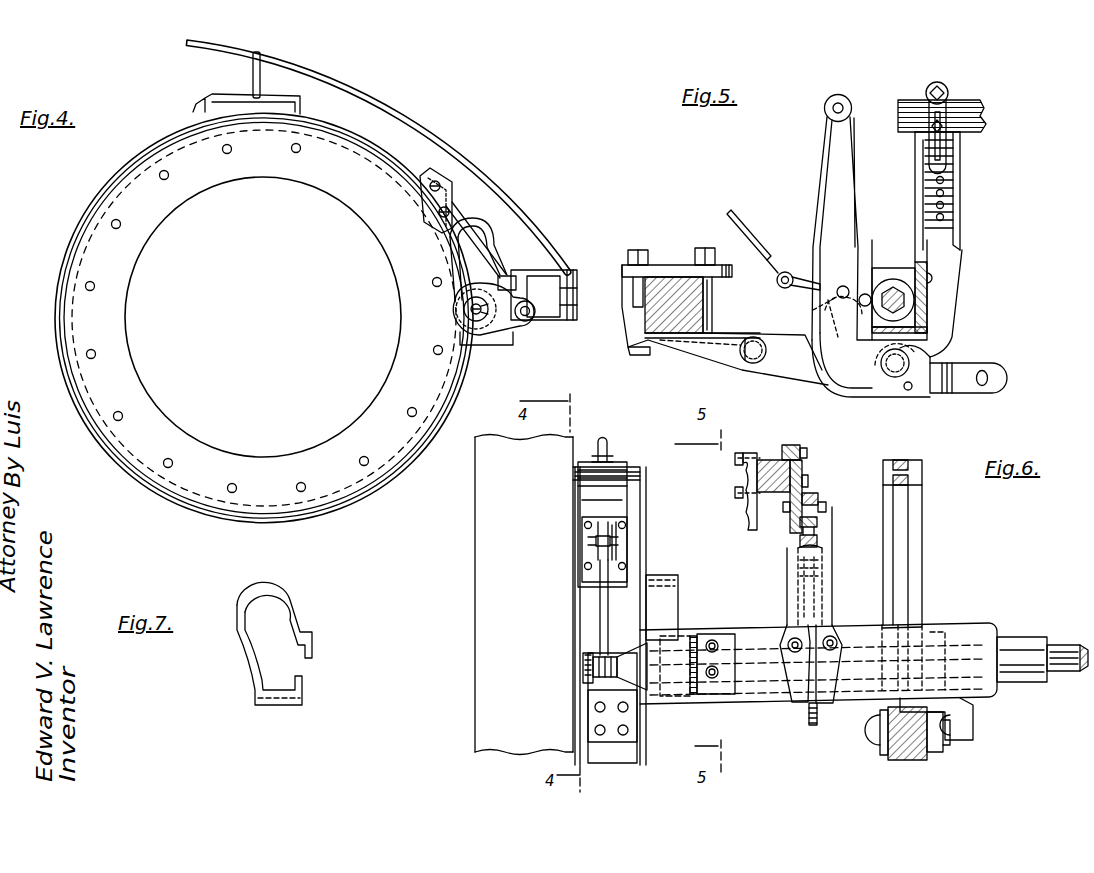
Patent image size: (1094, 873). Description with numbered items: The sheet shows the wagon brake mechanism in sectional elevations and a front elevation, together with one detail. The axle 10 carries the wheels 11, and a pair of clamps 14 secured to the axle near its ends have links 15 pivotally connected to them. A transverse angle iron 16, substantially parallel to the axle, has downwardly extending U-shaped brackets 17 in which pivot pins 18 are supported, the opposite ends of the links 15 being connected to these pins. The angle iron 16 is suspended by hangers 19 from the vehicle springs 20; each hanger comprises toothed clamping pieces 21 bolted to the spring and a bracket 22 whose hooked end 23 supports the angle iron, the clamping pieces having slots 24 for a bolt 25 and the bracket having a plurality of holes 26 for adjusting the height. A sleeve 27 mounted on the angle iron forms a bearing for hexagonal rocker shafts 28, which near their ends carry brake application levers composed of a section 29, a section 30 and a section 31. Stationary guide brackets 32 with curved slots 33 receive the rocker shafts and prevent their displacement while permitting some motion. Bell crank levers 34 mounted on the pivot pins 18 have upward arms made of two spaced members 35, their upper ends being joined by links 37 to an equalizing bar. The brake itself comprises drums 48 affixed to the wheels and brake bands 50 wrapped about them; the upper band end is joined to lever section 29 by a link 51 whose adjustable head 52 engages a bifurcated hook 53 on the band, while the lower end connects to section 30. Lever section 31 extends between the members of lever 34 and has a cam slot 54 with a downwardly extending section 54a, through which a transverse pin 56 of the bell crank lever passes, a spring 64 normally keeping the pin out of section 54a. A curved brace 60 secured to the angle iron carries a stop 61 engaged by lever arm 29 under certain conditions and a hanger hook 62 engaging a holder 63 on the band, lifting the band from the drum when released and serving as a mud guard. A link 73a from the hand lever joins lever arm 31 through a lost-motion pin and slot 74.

In FIG. 5, the axle 10 is at (668, 283).
In FIG. 6, the wheels 11 is at (478, 684).
In FIG. 5, the clamps 14 is at (675, 340).
In FIG. 5, the links 15 is at (799, 372).
In FIG. 6, the links 15 is at (930, 738).
In FIG. 4, the transverse angle iron 16 is at (503, 332).
In FIG. 5, the transverse angle iron 16 is at (915, 263).
In FIG. 6, the transverse angle iron 16 is at (755, 627).
In FIG. 6, the brackets 17 is at (958, 710).
In FIG. 5, the pivot pins 18 is at (895, 378).
In FIG. 6, the pivot pins 18 is at (888, 725).
In FIG. 5, the hangers 19 is at (970, 192).
In FIG. 6, the hangers 19 is at (836, 570).
In FIG. 5, the vehicle springs 20 is at (975, 100).
In FIG. 6, the vehicle springs 20 is at (770, 462).
In FIG. 5, the clamping pieces 21 is at (942, 84).
In FIG. 6, the clamping pieces 21 is at (797, 452).
In FIG. 5, the bracket 22 is at (952, 186).
In FIG. 6, the bracket 22 is at (832, 612).
In FIG. 5, the hooked end 23 is at (950, 348).
In FIG. 6, the hooked end 23 is at (806, 707).
In FIG. 5, the slots 24 is at (934, 118).
In FIG. 6, the slots 24 is at (800, 480).
In FIG. 5, the bolt 25 is at (946, 152).
In FIG. 6, the bolt 25 is at (812, 500).
In FIG. 5, the holes 26 is at (934, 214).
In FIG. 6, the holes 26 is at (815, 538).
In FIG. 6, the sleeve 27 is at (1030, 638).
In FIG. 5, the rocker shafts 28 is at (893, 291).
In FIG. 6, the rocker shafts 28 is at (1068, 648).
In FIG. 4, the lever section 29 is at (474, 327).
In FIG. 6, the lever section 29 is at (640, 700).
In FIG. 6, the lever section 30 is at (617, 655).
In FIG. 5, the lever section 31 is at (803, 292).
In FIG. 6, the lever section 31 is at (940, 624).
In FIG. 4, the guide brackets 32 is at (497, 228).
In FIG. 6, the guide brackets 32 is at (668, 575).
In FIG. 7, the guide brackets 32 is at (245, 652).
In FIG. 4, the curved slots 33 is at (473, 222).
In FIG. 7, the curved slots 33 is at (280, 606).
In FIG. 5, the bell crank levers 34 is at (871, 196).
In FIG. 6, the bell crank levers 34 is at (928, 564).
In FIG. 5, the spaced members 35 is at (846, 160).
In FIG. 6, the spaced members 35 is at (890, 522).
In FIG. 6, the links 37 is at (897, 460).
In FIG. 4, the brake drums 48 is at (78, 298).
In FIG. 6, the brake drums 48 is at (637, 500).
In FIG. 4, the brake bands 50 is at (106, 185).
In FIG. 6, the brake bands 50 is at (613, 472).
In FIG. 4, the link 51 is at (488, 256).
In FIG. 6, the link 51 is at (604, 608).
In FIG. 4, the adjustable head 52 is at (446, 186).
In FIG. 6, the adjustable head 52 is at (600, 540).
In FIG. 4, the bifurcated hook 53 is at (450, 192).
In FIG. 6, the bifurcated hook 53 is at (595, 555).
In FIG. 5, the cam slot 54 is at (864, 294).
In FIG. 5, the downwardly extending slot section 54a is at (850, 330).
In FIG. 5, the transverse pin 56 is at (843, 286).
In FIG. 4, the curved brace 60 is at (394, 112).
In FIG. 4, the stop 61 is at (548, 322).
In FIG. 4, the hanger hook 62 is at (251, 72).
In FIG. 4, the holder 63 is at (205, 99).
In FIG. 6, the holder 63 is at (607, 440).
In FIG. 5, the spring 64 is at (832, 297).
In FIG. 5, the link 73a is at (770, 226).
In FIG. 5, the pin and slot 74 is at (787, 270).